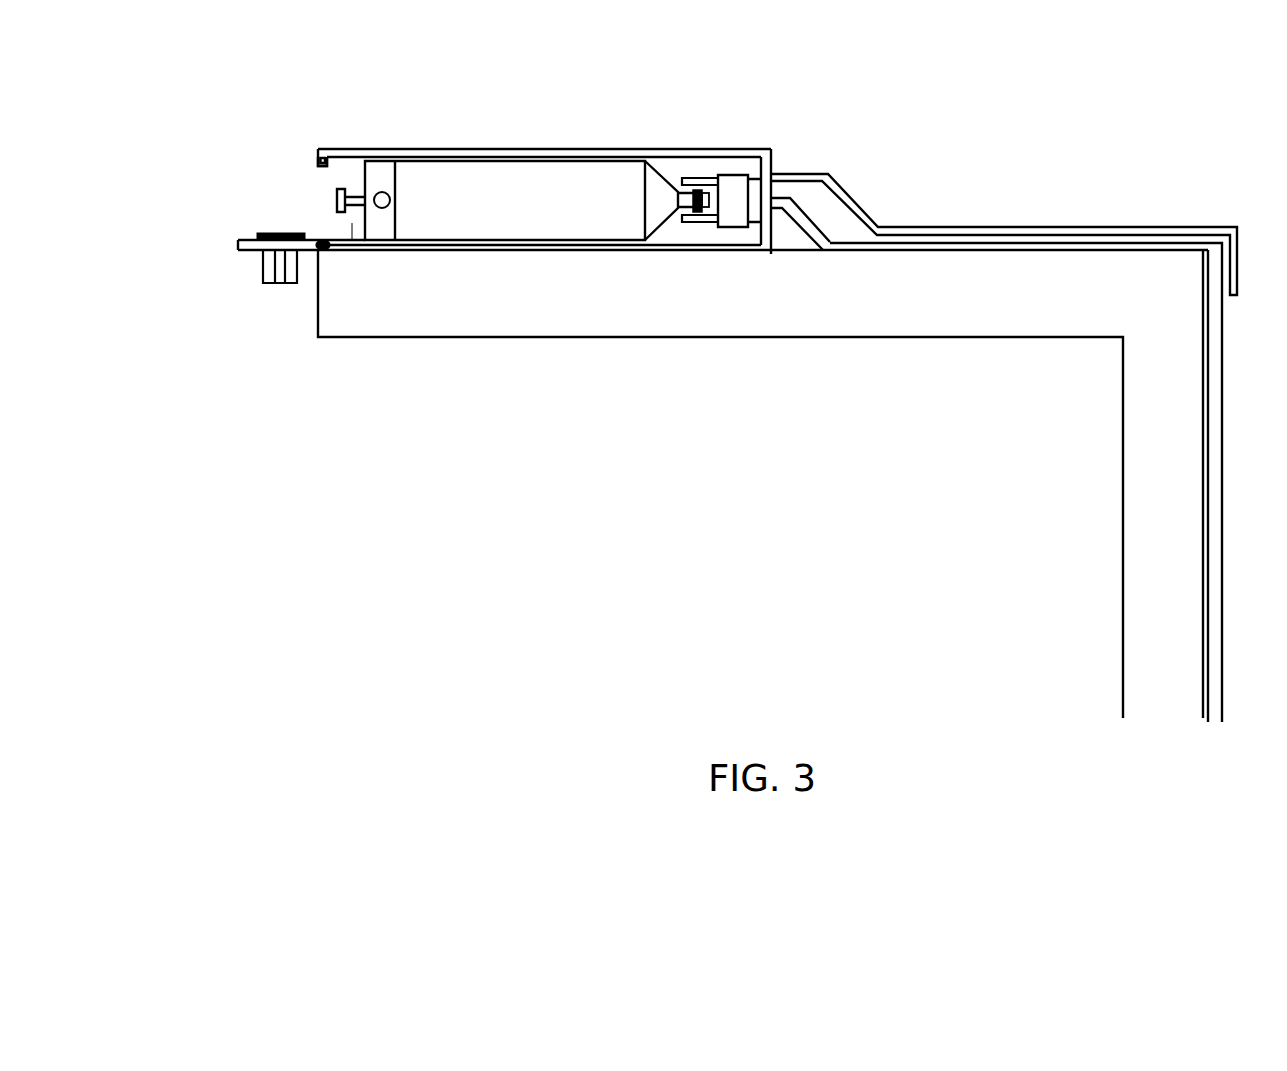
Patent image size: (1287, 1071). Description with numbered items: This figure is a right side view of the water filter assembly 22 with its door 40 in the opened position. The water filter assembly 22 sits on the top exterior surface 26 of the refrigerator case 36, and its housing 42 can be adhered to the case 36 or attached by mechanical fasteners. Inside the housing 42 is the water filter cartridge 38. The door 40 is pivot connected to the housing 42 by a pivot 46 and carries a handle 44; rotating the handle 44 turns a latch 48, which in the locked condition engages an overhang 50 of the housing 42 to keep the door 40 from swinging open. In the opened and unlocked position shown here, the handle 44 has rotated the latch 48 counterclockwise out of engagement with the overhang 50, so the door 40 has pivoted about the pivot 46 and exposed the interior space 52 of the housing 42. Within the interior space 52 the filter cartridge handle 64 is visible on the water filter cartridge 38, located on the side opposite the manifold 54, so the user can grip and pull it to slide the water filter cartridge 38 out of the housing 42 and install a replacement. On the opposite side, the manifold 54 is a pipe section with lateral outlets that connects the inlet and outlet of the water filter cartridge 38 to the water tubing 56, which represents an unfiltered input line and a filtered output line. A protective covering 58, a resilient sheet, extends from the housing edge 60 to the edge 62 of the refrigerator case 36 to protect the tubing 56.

The water filter assembly 22 is at (586, 86).
The top exterior surface 26 is at (425, 253).
The refrigerator case 36 is at (637, 315).
The water filter cartridge 38 is at (447, 173).
The door 40 is at (238, 244).
The housing 42 is at (385, 149).
The handle 44 is at (265, 282).
The pivot 46 is at (322, 250).
The latch 48 is at (290, 232).
The overhang 50 is at (322, 158).
The interior space 52 is at (353, 224).
The manifold 54 is at (740, 175).
The water tubing 56 is at (818, 228).
The protective covering 58 is at (958, 225).
The housing edge 60 is at (772, 163).
The edge of the refrigerator case 62 is at (1188, 253).
The filter cartridge handle 64 is at (333, 188).